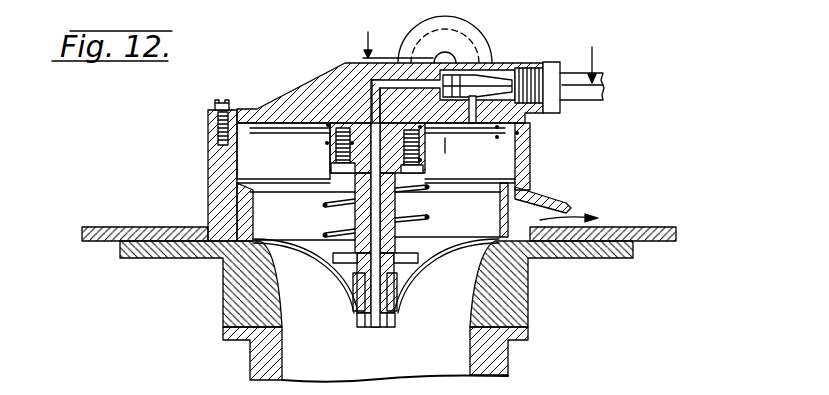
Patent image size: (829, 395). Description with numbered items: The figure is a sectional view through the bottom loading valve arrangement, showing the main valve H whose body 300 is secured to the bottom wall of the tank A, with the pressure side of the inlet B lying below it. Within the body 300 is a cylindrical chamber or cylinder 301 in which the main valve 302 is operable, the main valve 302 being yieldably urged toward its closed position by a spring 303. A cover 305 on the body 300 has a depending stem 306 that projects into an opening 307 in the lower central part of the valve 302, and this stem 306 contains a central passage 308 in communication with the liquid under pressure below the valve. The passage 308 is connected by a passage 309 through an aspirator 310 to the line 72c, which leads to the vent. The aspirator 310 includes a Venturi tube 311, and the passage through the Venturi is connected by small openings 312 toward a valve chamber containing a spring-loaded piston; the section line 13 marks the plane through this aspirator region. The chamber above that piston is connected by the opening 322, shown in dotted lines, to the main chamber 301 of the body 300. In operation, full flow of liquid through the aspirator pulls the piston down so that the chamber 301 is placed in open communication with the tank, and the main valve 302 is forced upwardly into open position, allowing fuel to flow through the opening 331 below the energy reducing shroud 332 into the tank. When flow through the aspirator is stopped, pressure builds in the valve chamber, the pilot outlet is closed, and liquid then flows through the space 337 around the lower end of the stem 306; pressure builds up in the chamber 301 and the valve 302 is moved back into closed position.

The body 300 is at (212, 186).
The cylindrical chamber 301 is at (282, 161).
The main valve 302 is at (258, 223).
The spring 303 is at (423, 215).
The cover 305 is at (276, 106).
The depending stem 306 is at (406, 210).
The opening 307 is at (354, 314).
The central passage 308 is at (372, 325).
The passage 309 is at (437, 80).
The aspirator 310 is at (505, 58).
The Venturi tube 311 is at (482, 63).
The small openings 312 is at (472, 126).
The opening 322 is at (470, 150).
The opening 331 is at (536, 200).
The energy reducing shroud 332 is at (565, 200).
The space 337 is at (396, 313).
The line 72c is at (572, 75).
The section line 13- 13 is at (472, 58).
The main valve H is at (532, 158).
The tank A is at (668, 226).
The inlet B is at (498, 364).